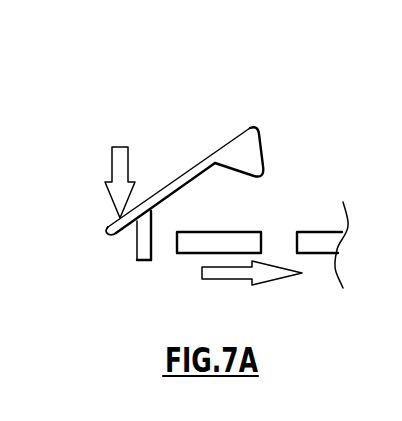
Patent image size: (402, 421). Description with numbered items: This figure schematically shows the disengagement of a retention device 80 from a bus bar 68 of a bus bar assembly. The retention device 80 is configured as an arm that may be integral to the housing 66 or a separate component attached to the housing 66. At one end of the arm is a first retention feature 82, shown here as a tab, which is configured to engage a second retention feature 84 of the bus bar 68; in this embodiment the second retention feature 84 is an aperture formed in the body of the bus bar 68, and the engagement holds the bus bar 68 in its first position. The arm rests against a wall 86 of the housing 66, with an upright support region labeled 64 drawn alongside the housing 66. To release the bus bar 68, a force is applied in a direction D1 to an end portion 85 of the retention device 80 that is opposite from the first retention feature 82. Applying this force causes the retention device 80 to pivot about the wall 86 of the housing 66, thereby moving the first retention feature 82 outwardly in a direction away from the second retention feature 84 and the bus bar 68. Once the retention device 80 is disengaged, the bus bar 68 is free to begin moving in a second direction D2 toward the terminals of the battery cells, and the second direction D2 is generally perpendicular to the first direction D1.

The blade 64 is at (213, 128).
The retention device 80 is at (185, 158).
The first retention feature 82 is at (250, 152).
The end portion 85 is at (108, 233).
The wall 86 is at (147, 229).
The housing 66 is at (141, 260).
The bus bar 68 is at (232, 220).
The second retention feature 84 is at (285, 235).
The direction D1 is at (112, 167).
The second direction D2 is at (232, 280).